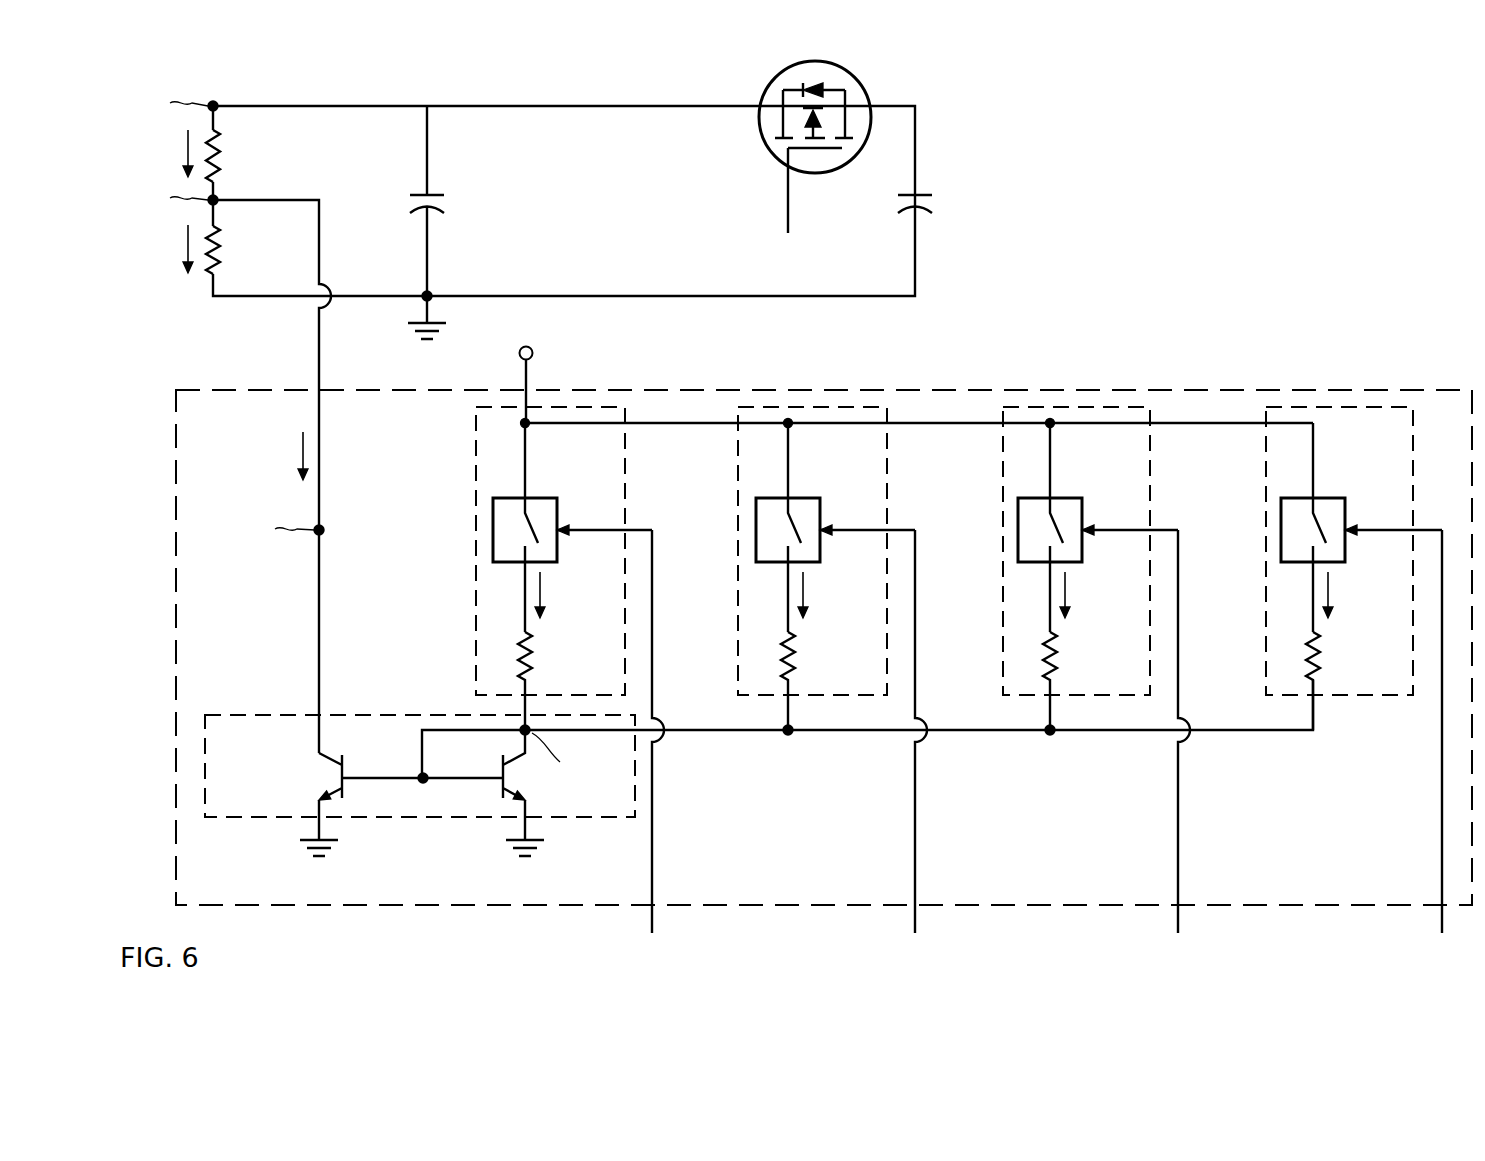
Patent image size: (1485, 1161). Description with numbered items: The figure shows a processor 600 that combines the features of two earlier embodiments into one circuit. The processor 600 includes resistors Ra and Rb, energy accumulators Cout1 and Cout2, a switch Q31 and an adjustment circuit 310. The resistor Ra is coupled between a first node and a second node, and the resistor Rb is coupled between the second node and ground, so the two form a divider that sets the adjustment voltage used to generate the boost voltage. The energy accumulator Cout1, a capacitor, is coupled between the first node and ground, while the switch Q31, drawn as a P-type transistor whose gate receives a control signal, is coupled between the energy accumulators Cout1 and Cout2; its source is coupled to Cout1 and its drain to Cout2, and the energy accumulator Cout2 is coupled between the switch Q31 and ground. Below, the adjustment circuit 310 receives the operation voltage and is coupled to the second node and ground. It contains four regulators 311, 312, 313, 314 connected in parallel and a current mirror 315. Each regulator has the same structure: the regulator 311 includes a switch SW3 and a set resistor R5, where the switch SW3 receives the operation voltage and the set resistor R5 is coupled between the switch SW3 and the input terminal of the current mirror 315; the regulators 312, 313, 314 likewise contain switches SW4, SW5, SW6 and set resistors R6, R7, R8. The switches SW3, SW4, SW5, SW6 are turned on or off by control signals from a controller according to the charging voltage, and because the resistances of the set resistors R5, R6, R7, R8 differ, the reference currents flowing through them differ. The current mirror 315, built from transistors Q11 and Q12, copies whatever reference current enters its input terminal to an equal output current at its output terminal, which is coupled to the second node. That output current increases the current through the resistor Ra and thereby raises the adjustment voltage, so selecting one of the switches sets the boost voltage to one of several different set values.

The processor 600 is at (1334, 126).
The adjustment circuit 310 is at (1359, 388).
The regulator 311 is at (475, 450).
The regulator 312 is at (739, 450).
The regulator 313 is at (1001, 450).
The regulator 314 is at (1265, 450).
The current mirror 315 is at (402, 712).
The resistor Ra is at (222, 146).
The resistor Rb is at (222, 252).
The energy accumulator Cout1 is at (447, 205).
The energy accumulator Cout2 is at (935, 203).
The switch Q31 is at (768, 153).
The transistor Q11 is at (317, 779).
The transistor Q12 is at (527, 780).
The switch SW3 is at (543, 497).
The switch SW4 is at (806, 497).
The switch SW5 is at (1068, 497).
The switch SW6 is at (1333, 497).
The set resistor R5 is at (535, 660).
The set resistor R6 is at (798, 660).
The set resistor R7 is at (1060, 660).
The set resistor R8 is at (1323, 660).